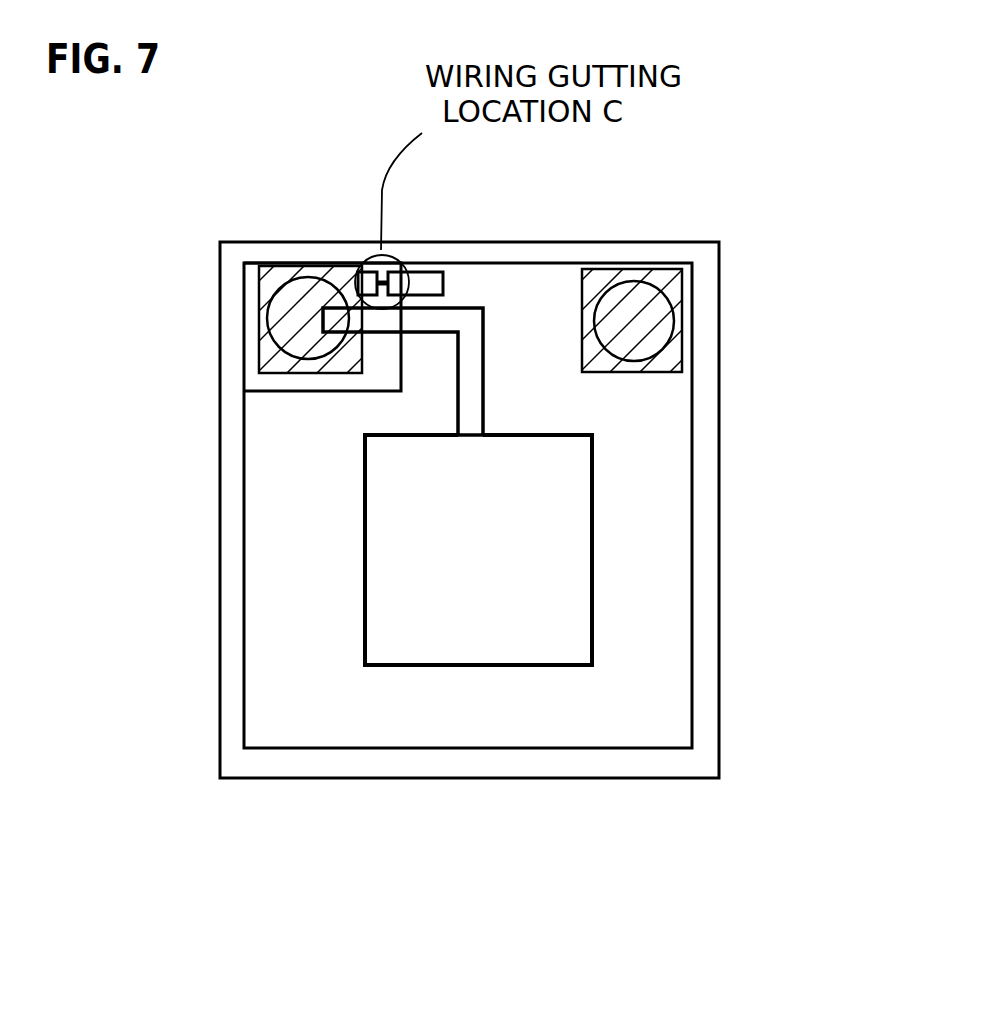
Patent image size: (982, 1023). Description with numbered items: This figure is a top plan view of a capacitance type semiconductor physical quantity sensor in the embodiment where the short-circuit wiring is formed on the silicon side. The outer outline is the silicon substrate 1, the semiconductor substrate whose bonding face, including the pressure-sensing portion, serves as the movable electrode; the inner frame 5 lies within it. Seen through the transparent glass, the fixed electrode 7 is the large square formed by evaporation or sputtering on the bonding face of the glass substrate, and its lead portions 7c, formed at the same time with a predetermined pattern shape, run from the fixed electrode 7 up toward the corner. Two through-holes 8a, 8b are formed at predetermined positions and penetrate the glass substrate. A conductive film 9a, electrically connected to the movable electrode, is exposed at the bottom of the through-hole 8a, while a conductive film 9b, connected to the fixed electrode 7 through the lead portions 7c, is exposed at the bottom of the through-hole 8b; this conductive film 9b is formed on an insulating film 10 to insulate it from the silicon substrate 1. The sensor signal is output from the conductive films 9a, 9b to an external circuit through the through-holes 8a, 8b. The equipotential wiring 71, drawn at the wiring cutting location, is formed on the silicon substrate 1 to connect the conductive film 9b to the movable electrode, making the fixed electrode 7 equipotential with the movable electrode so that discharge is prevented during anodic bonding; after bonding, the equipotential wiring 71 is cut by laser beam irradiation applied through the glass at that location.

The silicon substrate 1 is at (216, 641).
The base plate 5 is at (703, 502).
The fixed electrode 7 is at (434, 650).
The lead portions 7c is at (478, 335).
The equipotential wiring 71 is at (440, 262).
The through-hole 8a is at (674, 295).
The through-hole 8b is at (263, 283).
The conductive film 9a is at (675, 360).
The conductive film 9b is at (262, 345).
The insulating film 10 is at (312, 384).